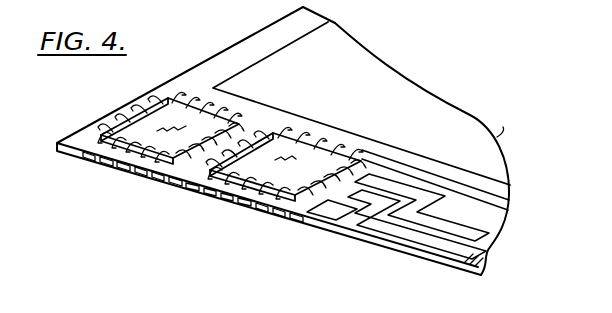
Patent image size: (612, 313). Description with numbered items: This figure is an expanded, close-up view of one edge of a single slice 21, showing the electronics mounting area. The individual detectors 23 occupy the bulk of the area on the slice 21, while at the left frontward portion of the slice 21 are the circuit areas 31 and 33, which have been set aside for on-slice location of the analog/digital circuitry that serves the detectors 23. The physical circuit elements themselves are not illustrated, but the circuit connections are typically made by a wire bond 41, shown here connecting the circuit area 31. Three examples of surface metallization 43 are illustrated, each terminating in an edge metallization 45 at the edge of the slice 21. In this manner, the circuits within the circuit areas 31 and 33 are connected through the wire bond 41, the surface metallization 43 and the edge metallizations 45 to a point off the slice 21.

The slice 21 is at (208, 59).
The detectors 23 is at (448, 153).
The circuit area 31 is at (155, 169).
The circuit area 33 is at (288, 191).
The wire bond 41 is at (124, 108).
The surface metallization 43 is at (443, 198).
The edge metallization 45 is at (410, 247).